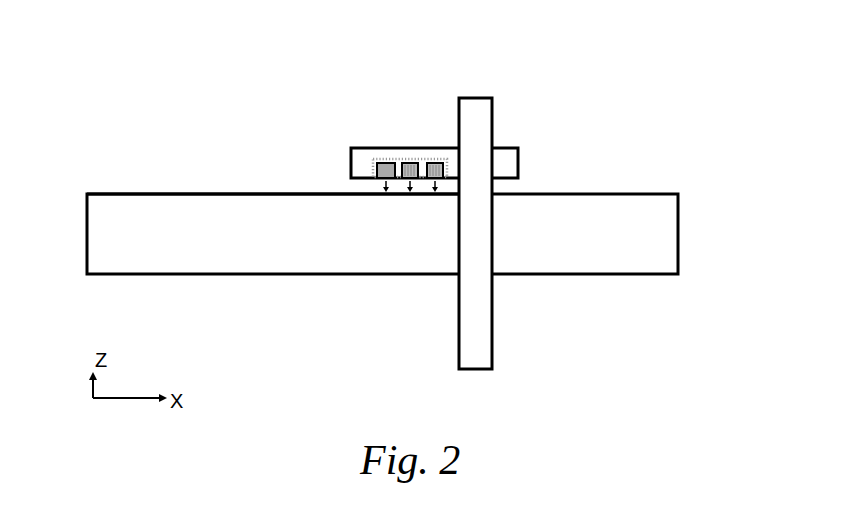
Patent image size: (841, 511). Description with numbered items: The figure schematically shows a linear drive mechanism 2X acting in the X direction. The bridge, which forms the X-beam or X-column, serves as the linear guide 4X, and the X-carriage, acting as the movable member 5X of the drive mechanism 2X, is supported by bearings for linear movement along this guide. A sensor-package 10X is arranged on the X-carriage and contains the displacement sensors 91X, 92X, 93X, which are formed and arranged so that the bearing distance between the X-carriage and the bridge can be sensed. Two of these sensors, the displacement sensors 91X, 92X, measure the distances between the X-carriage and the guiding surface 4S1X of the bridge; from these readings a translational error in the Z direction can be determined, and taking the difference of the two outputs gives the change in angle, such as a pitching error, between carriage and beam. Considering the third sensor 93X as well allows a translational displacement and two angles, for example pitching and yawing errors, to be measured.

The linear drive mechanism 2X is at (358, 201).
The linear guide 4X is at (517, 217).
The guiding surface 4S1X is at (133, 193).
The movable member 5X is at (503, 157).
The sensor-package 10X is at (437, 160).
The displacement sensor 91X is at (428, 158).
The displacement sensor 92X is at (405, 160).
The displacement sensor 93X is at (383, 167).